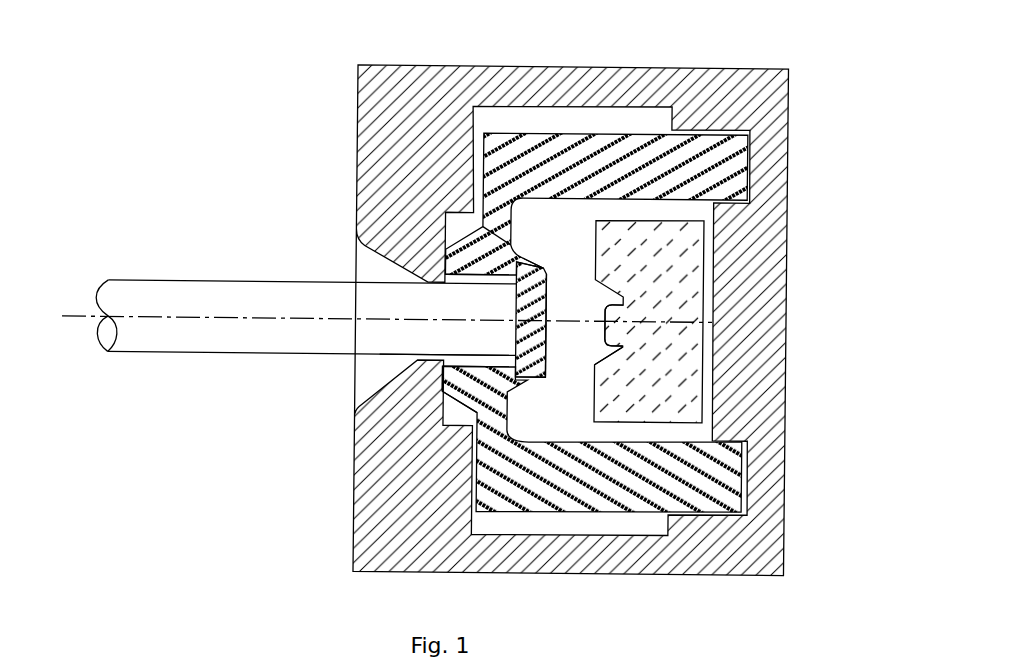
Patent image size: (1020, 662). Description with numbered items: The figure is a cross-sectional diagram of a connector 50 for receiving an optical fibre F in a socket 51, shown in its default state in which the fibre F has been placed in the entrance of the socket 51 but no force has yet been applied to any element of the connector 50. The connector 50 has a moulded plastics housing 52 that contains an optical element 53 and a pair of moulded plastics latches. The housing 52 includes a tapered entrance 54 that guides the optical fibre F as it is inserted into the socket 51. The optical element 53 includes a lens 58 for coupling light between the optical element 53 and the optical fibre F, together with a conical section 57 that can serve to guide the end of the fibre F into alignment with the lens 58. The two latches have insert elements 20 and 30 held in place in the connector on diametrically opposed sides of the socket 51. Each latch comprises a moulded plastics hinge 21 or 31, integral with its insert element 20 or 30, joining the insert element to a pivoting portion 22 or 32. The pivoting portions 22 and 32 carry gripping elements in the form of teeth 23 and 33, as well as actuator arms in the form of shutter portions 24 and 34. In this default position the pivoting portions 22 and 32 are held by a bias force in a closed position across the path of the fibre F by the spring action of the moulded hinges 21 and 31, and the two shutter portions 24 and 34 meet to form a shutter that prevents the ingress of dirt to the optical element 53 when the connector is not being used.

The connector 50 is at (186, 86).
The housing 52 is at (400, 110).
The insert element 20 is at (630, 138).
The hinge 21 is at (508, 248).
The pivoting portion 22 is at (543, 268).
The teeth 23 is at (516, 275).
The shutter portion 24 is at (516, 309).
The insert element 30 is at (549, 378).
The hinge 31 is at (440, 385).
The pivoting portion 32 is at (528, 378).
The teeth 33 is at (445, 379).
The shutter portion 34 is at (551, 373).
The optical fibre F is at (167, 301).
The socket 51 is at (432, 356).
The optical element 53 is at (657, 255).
The tapered entrance 54 is at (443, 367).
The conical section 57 is at (605, 352).
The lens 58 is at (607, 313).